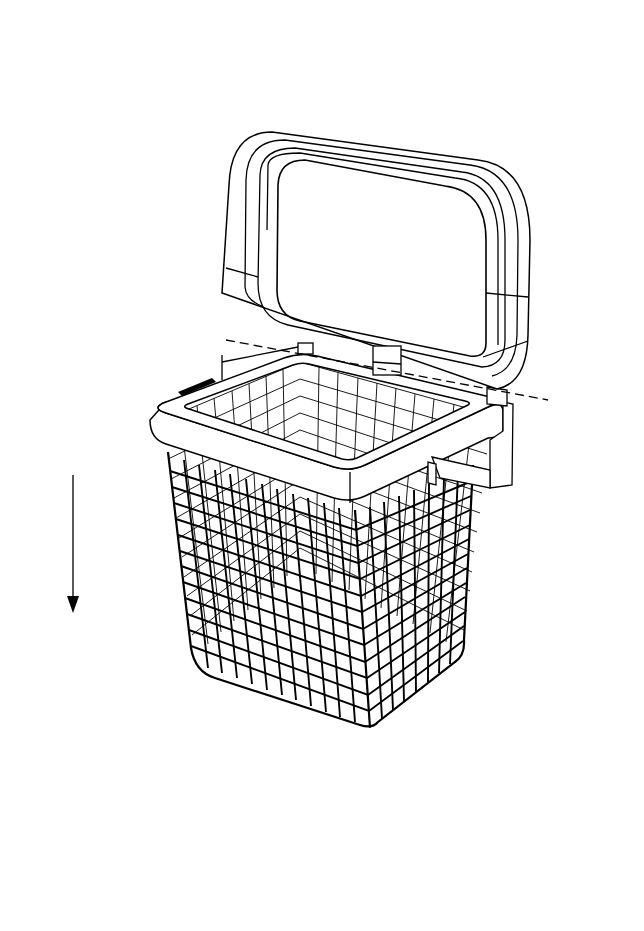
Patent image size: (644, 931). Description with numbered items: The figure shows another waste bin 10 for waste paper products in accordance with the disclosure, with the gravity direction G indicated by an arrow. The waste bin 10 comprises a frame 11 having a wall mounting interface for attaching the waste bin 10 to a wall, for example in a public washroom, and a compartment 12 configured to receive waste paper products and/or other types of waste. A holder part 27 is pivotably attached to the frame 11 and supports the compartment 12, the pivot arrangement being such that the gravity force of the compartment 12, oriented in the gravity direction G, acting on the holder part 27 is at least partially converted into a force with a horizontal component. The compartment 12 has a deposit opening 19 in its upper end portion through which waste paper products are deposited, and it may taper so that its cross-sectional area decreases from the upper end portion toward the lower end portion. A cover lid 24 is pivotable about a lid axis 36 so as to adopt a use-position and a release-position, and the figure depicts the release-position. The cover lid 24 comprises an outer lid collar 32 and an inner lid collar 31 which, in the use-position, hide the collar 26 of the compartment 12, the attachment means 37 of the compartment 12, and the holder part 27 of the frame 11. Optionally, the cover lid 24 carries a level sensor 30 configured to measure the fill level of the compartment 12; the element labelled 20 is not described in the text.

The waste bin 10 is at (213, 128).
The frame 11 is at (508, 452).
The compartment 12 is at (449, 683).
The deposit opening 19 is at (231, 334).
The lid 20 is at (323, 236).
The cover lid 24 is at (525, 280).
The collar 26 is at (150, 441).
The holder part 27 is at (482, 463).
The level sensor 30 is at (384, 358).
The inner lid collar 31 is at (262, 276).
The outer lid collar 32 is at (232, 268).
The lid axis 36 is at (530, 396).
The attachment means 37 is at (183, 393).
The gravity direction G is at (73, 510).